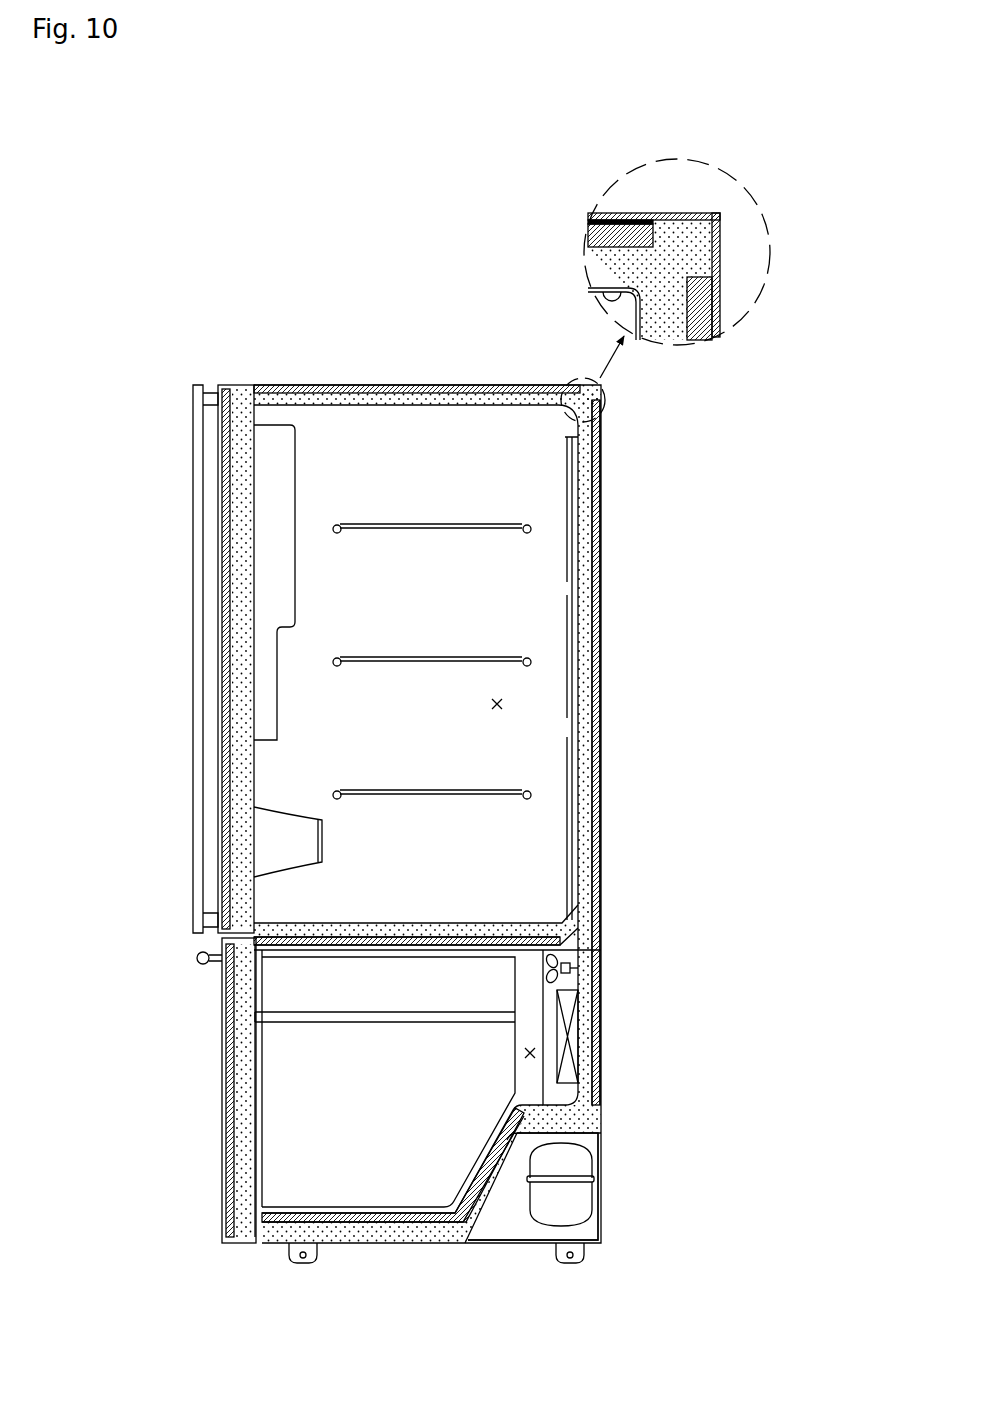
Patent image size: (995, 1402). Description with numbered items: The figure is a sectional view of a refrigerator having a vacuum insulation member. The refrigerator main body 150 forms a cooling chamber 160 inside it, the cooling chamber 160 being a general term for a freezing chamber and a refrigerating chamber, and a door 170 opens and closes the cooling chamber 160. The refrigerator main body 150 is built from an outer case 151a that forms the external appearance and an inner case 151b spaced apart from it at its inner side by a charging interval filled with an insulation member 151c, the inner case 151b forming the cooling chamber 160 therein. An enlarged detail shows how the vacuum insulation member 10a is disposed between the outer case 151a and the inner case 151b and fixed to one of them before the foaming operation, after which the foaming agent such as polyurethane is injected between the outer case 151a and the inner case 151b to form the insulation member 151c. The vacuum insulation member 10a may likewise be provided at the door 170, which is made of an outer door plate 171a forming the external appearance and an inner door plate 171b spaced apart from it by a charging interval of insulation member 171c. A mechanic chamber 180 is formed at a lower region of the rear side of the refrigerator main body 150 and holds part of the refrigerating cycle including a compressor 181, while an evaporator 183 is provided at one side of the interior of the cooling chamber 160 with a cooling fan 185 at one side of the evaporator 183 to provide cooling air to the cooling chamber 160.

The vacuum insulation member 10a is at (415, 384).
The refrigerator main body 150 is at (737, 112).
The outer case 151a is at (645, 217).
The inner case 151b is at (625, 222).
The insulation member (foaming agent) 151c is at (680, 250).
The cooling chamber 160 is at (500, 704).
The door 170 is at (185, 831).
The outer door plate 171a is at (228, 1095).
The inner door plate 171b is at (258, 1195).
The insulation member 171c is at (243, 1148).
The mechanic chamber 180 is at (597, 1156).
The compressor 181 is at (580, 1193).
The evaporator 183 is at (575, 1013).
The cooling fan 185 is at (570, 969).